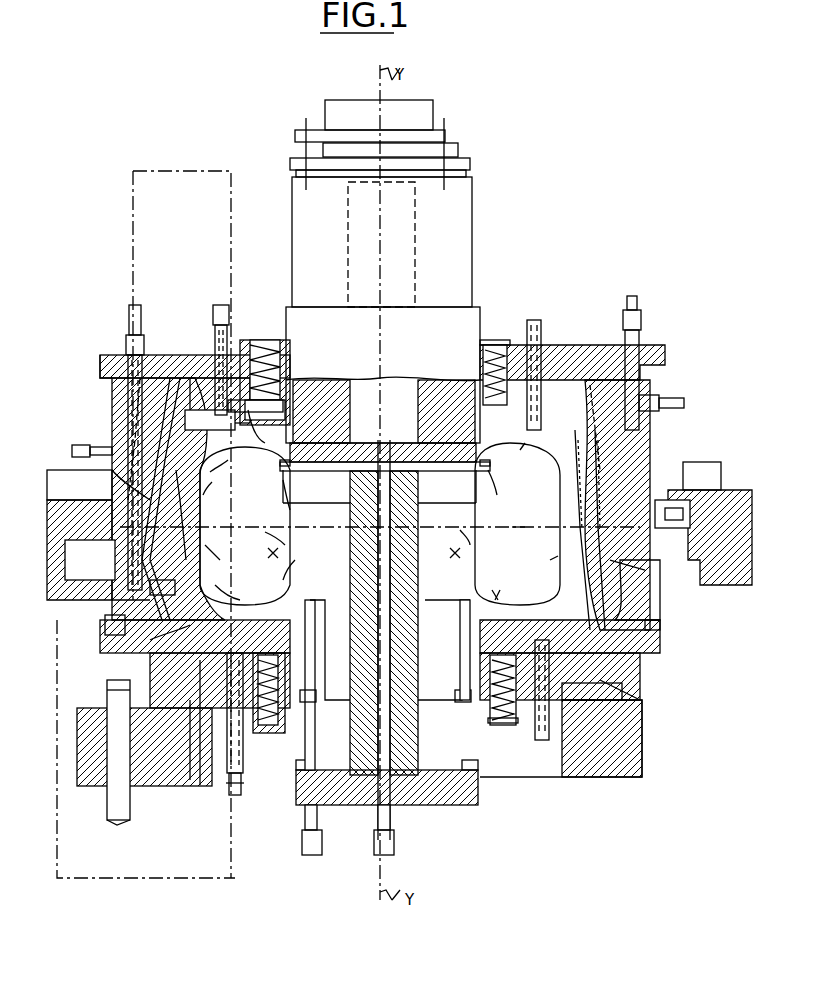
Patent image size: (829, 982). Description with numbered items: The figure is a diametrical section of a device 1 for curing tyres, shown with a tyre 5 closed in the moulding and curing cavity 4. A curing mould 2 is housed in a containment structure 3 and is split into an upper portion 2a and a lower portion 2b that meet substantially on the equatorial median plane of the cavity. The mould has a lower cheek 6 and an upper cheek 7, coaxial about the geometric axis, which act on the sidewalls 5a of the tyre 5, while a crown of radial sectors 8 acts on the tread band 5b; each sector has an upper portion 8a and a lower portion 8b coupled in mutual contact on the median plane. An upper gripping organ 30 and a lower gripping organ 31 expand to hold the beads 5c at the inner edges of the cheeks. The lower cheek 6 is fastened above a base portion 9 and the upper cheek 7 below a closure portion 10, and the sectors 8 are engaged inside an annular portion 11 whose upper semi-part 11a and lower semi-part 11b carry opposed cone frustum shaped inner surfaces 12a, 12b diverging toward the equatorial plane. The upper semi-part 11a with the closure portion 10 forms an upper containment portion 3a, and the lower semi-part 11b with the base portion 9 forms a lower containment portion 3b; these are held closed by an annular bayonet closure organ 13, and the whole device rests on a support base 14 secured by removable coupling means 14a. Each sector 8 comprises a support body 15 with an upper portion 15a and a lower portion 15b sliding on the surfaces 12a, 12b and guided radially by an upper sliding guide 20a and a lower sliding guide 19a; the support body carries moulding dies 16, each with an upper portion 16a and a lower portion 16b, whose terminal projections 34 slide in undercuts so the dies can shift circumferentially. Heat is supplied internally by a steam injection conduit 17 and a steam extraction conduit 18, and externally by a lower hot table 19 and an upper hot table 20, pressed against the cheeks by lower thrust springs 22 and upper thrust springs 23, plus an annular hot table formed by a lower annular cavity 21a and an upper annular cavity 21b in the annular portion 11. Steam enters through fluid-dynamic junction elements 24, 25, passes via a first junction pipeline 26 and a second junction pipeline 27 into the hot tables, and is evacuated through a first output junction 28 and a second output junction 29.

The device for curing tyres 1 is at (524, 184).
The curing mould 2 is at (583, 347).
The upper portion of the curing mould 2a is at (640, 400).
The lower portion of the curing mould 2b is at (610, 640).
The containment structure 3 is at (172, 355).
The upper containment portion 3a is at (150, 355).
The lower containment portion 3b is at (160, 710).
The moulding and curing cavity 4 is at (446, 516).
The tyre 5 is at (538, 518).
The sidewalls of the tyre 5a is at (520, 450).
The tread band of the tyre 5b is at (558, 549).
The beads of the tyre 5c is at (495, 535).
The lower cheek 6 is at (277, 740).
The upper cheek 7 is at (280, 340).
The radial sectors 8 is at (612, 500).
The upper portion of the sector 8a is at (600, 425).
The lower portion of the sector 8b is at (615, 590).
The base portion 9 is at (212, 740).
The closure portion 10 is at (207, 378).
The annular portion 11 is at (100, 540).
The upper semi-part of the annular portion 11a is at (150, 470).
The lower semi-part of the annular portion 11b is at (160, 605).
The upper cone frustum shaped inner surface 12a is at (165, 355).
The lower cone frustum shaped inner surface 12b is at (185, 640).
The annular bayonet closure organ 13 is at (722, 500).
The support base 14 is at (635, 778).
The removable coupling means 14a is at (110, 805).
The support body 15 is at (238, 490).
The upper portion of the support body 15a is at (224, 465).
The lower portion of the support body 15b is at (212, 579).
The moulding die 16 is at (196, 536).
The upper portion of the moulding die 16a is at (222, 484).
The lower portion of the moulding die 16b is at (212, 549).
The steam injection conduit 17 is at (310, 812).
The steam extraction conduit 18 is at (392, 815).
The lower hot table 19 is at (252, 796).
The lower sliding guide 19a is at (188, 740).
The upper hot table 20 is at (268, 340).
The upper sliding guide 20a is at (212, 350).
The lower annular cavity 21a is at (640, 585).
The upper annular cavity 21b is at (135, 455).
The lower thrust springs 22 is at (508, 730).
The upper thrust springs 23 is at (506, 345).
The first fluid-dynamic junction element 24 is at (80, 447).
The second fluid-dynamic junction element 25 is at (110, 590).
The first junction pipeline 26 is at (231, 878).
The second junction pipeline 27 is at (231, 171).
The first output junction 28 is at (545, 740).
The second output junction 29 is at (541, 345).
The upper gripping organ 30 is at (297, 500).
The lower gripping organ 31 is at (299, 563).
The terminal projections 34 is at (249, 335).